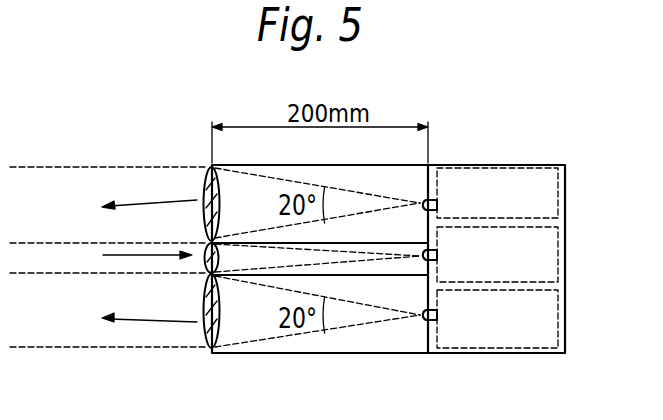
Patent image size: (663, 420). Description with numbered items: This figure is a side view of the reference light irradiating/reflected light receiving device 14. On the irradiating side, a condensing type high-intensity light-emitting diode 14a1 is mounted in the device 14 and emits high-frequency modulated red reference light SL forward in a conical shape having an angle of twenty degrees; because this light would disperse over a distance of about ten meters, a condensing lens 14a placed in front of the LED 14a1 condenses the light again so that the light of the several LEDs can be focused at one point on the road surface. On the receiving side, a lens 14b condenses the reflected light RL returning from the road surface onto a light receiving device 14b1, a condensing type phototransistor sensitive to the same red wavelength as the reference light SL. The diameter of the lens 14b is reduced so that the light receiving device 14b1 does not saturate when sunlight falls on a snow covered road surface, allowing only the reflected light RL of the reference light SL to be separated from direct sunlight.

The reference light irradiating/reflected light receiving device 14 is at (497, 156).
The condensing lens 14a is at (203, 184).
The lens 14b is at (203, 265).
The condensing type high-intensity light-emitting diode 14a1 is at (480, 383).
The light receiving device 14b1 is at (437, 255).
The reference light SL is at (153, 200).
The reflected light RL is at (130, 254).